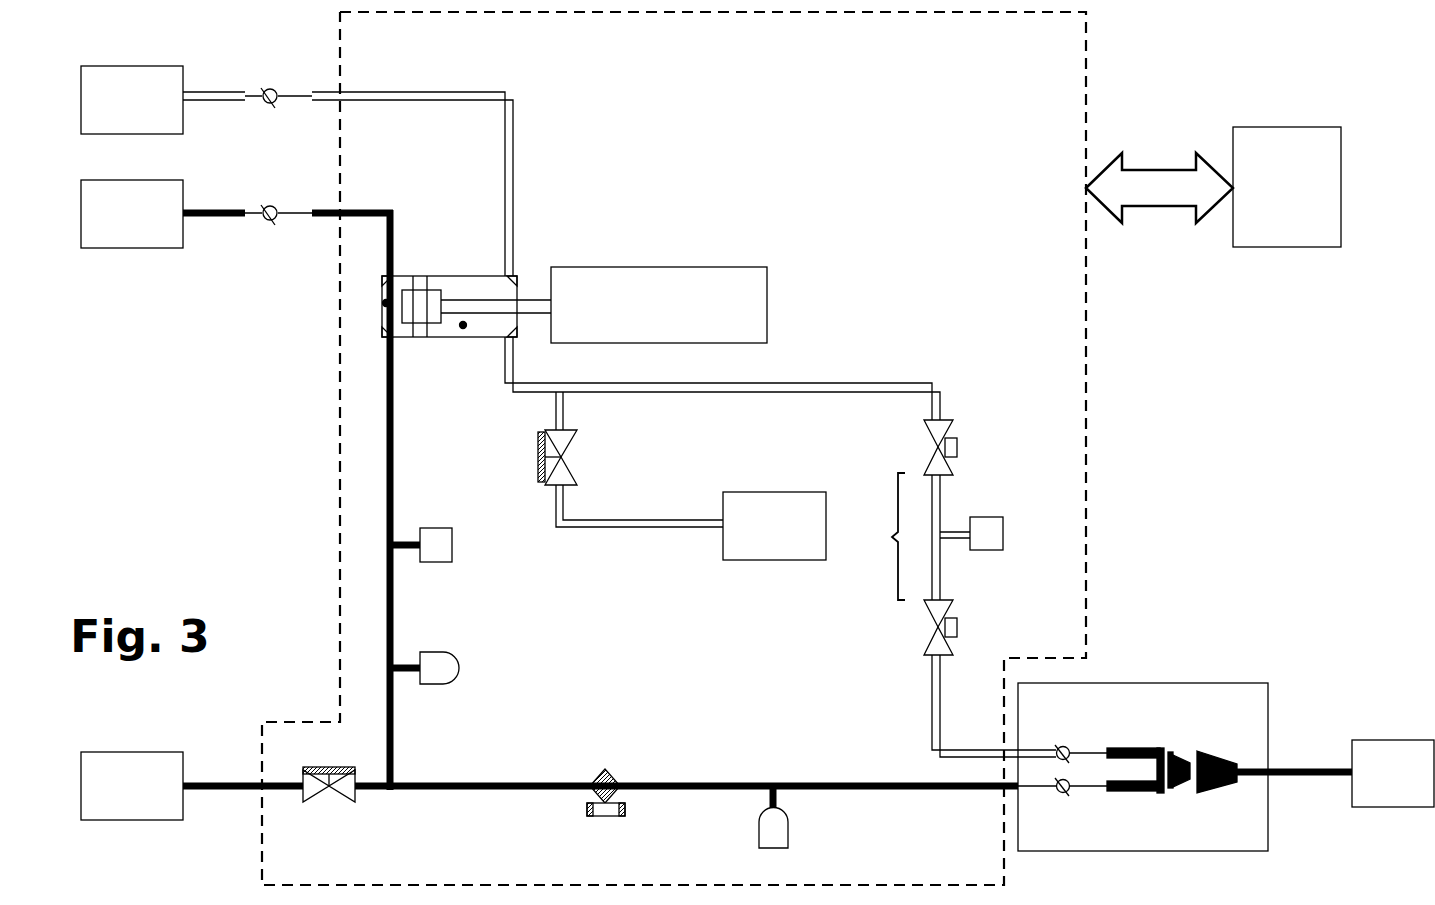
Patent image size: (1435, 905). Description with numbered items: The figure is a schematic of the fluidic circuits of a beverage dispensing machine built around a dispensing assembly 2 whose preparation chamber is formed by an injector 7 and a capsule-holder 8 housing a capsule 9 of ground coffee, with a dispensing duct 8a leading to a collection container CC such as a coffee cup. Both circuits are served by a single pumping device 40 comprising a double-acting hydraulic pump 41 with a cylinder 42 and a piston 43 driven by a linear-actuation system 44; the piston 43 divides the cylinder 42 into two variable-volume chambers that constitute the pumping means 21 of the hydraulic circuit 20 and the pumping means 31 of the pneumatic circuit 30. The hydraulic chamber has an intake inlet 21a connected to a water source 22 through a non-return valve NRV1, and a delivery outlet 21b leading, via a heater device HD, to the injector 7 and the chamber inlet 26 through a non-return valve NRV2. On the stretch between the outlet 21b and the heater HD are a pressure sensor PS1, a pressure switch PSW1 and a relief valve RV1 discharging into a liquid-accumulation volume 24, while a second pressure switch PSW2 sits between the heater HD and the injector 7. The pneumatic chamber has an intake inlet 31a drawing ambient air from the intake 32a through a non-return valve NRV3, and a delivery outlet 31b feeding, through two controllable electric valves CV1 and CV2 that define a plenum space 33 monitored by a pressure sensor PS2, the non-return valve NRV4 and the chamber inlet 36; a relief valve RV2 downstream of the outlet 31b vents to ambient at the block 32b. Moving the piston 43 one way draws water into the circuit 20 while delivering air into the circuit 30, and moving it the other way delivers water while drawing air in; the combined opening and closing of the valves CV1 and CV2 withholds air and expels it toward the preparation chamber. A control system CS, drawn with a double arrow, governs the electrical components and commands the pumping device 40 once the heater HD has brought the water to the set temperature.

The dispensing assembly 2 is at (1132, 718).
The injector 7 is at (1163, 753).
The capsule-holder 8 is at (1212, 755).
The dispensing duct 8a is at (1293, 767).
The capsule 9 is at (1178, 783).
The hydraulic circuit 20 is at (372, 512).
The pumping means 21 is at (385, 303).
The intake inlet 21a is at (378, 280).
The delivery outlet 21b is at (380, 334).
The water source 22 is at (132, 214).
The liquid-accumulation volume 24 is at (132, 786).
The inlet of the preparation chamber 26 is at (1013, 798).
The pneumatic circuit 30 is at (885, 374).
The pumping means 31 is at (462, 328).
The intake inlet 31a is at (527, 278).
The delivery outlet 31b is at (505, 333).
The air intake 32a is at (132, 100).
The ambient-pressure outlet 32b is at (774, 526).
The plenum space 33 is at (892, 537).
The inlet of the preparation chamber 36 is at (1013, 745).
The pumping device 40 is at (632, 194).
The double-acting hydraulic pump 41 is at (531, 340).
The cylinder 42 is at (460, 290).
The piston 43 is at (425, 288).
The linear-actuation system 44 is at (735, 263).
The non-return valve NRV1 is at (288, 230).
The non-return valve NRV2 is at (1057, 812).
The non-return valve NRV3 is at (348, 168).
The non-return valve NRV4 is at (1057, 729).
The relief valve RV1 is at (329, 801).
The relief valve RV2 is at (630, 459).
The controllable electric valve CV1 is at (967, 447).
The controllable electric valve CV2 is at (967, 627).
The pressure sensor PS1 is at (444, 545).
The pressure sensor PS2 is at (996, 533).
The pressure switch PSW1 is at (457, 668).
The second pressure switch PSW2 is at (808, 817).
The heater device HD is at (606, 807).
The control system CS is at (1287, 187).
The collection container CC is at (1393, 773).